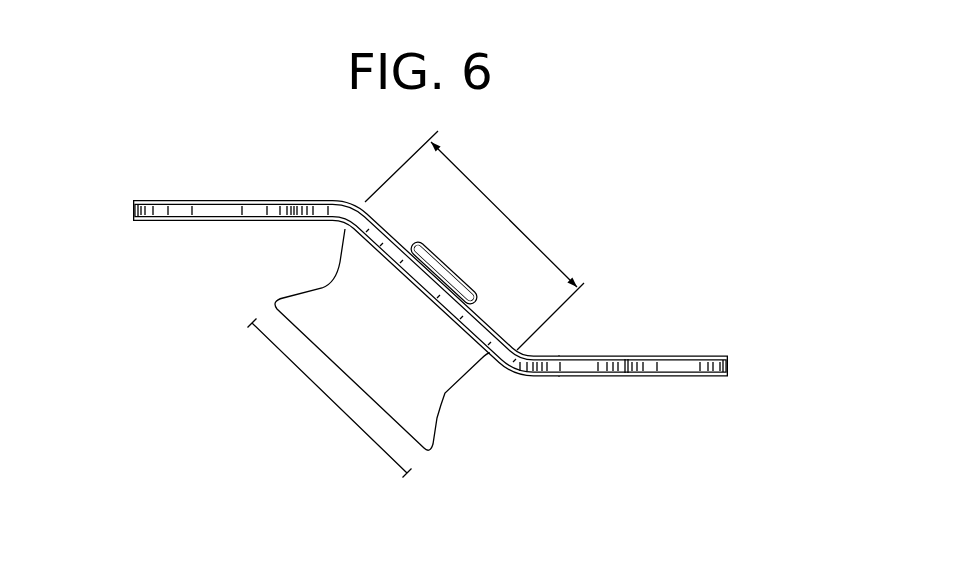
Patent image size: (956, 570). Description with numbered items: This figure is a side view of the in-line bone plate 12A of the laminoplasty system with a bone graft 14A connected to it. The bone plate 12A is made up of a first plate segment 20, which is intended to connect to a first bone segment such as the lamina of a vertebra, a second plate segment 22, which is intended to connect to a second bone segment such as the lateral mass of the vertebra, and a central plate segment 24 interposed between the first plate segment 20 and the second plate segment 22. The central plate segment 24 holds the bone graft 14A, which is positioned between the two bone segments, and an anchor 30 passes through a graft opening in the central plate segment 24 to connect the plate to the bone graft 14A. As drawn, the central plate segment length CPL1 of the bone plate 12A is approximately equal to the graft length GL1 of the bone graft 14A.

The in-line bone plate 12A is at (430, 276).
The first plate segment 20 is at (185, 222).
The second plate segment 22 is at (675, 378).
The central plate segment 24 is at (375, 220).
The anchor 30 is at (452, 273).
The bone graft 14A is at (430, 420).
The graft length GL1 is at (308, 380).
The central plate segment length CPL1 is at (503, 218).